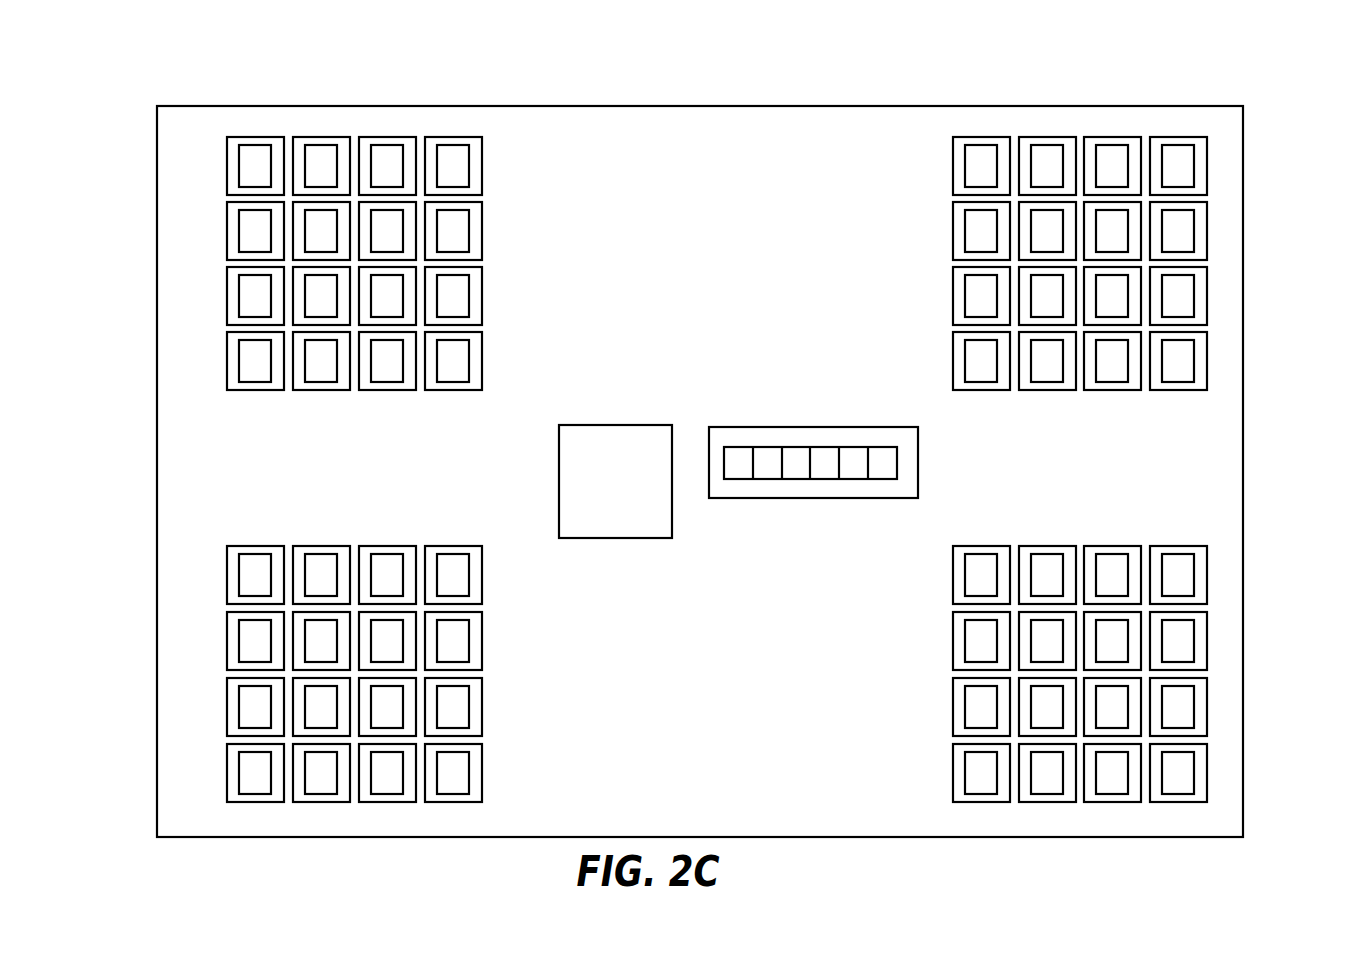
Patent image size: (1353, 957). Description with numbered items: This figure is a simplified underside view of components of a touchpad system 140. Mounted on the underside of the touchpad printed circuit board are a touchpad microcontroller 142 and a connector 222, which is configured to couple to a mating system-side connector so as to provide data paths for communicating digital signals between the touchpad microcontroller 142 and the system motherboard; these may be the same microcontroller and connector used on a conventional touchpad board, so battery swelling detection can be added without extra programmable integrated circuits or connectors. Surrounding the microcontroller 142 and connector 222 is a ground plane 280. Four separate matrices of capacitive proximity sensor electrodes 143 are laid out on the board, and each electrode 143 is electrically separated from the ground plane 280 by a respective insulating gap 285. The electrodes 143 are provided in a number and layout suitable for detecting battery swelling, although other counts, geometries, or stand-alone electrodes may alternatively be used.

The touchpad system 140 is at (812, 87).
The ground plane 280 is at (616, 211).
The touchpad microcontroller 142 is at (615, 481).
The connector 222 is at (815, 499).
The capacitive proximity sensor electrodes 143 is at (252, 361).
The insulating gaps 285 is at (475, 360).